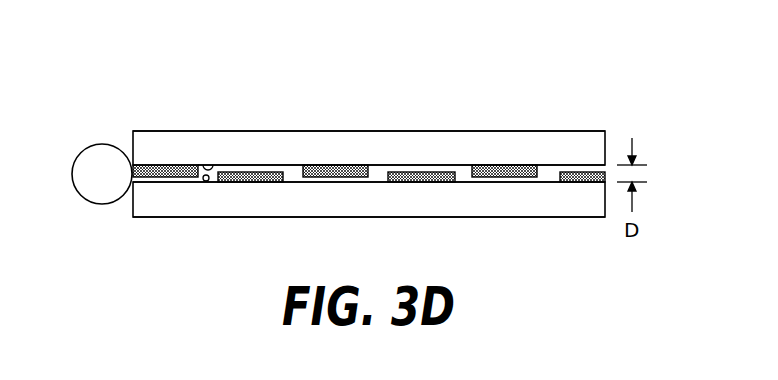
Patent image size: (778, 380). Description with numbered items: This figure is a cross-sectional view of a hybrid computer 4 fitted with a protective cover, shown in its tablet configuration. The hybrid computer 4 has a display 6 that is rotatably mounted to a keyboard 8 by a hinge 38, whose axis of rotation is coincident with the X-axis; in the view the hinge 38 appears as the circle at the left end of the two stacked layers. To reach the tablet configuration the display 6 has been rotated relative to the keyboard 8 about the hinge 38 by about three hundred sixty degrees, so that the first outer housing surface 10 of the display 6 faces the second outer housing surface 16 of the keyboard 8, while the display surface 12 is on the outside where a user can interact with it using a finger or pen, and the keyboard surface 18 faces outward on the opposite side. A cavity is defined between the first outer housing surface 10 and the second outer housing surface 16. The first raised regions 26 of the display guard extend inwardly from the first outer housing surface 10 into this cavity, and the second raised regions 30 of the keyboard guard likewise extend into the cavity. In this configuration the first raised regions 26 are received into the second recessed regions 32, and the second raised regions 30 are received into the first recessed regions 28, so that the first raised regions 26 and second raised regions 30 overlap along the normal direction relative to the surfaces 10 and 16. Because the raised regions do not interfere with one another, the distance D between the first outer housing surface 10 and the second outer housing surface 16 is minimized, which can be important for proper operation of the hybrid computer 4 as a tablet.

The hybrid computer 4 is at (161, 60).
The display 6 is at (155, 144).
The keyboard 8 is at (157, 205).
The first outer housing surface 10 is at (202, 164).
The display surface 12 is at (292, 130).
The second outer housing surface 16 is at (204, 181).
The keyboard surface 18 is at (502, 217).
The first raised regions 26 is at (517, 170).
The first recessed regions 28 is at (427, 165).
The second raised regions 30 is at (250, 175).
The second recessed regions 32 is at (335, 182).
The hinge 38 is at (102, 145).